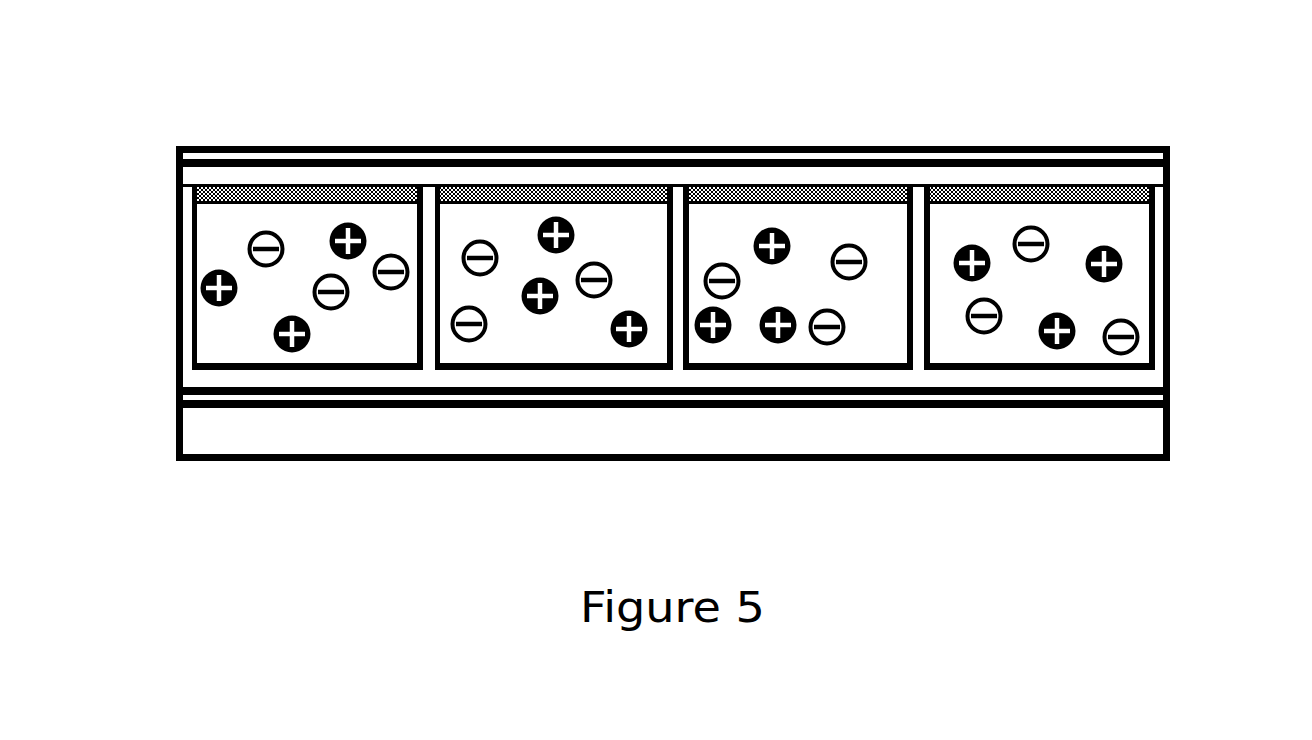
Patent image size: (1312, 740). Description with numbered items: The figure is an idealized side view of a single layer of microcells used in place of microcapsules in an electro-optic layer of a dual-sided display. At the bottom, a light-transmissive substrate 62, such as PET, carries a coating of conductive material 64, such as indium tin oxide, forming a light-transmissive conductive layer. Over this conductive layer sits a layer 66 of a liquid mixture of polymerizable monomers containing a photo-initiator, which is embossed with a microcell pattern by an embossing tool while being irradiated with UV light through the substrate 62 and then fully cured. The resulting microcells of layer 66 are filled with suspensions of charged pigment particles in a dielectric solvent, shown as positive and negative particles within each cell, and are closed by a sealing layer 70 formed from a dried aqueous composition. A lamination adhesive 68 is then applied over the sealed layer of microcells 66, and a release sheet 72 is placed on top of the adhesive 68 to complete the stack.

The light-transmissive substrate 62 is at (176, 428).
The conductive material 64 is at (1170, 400).
The layer of microcells 66 is at (1170, 376).
The lamination adhesive 68 is at (176, 178).
The sealing layer 70 is at (1035, 187).
The release sheet 72 is at (228, 146).